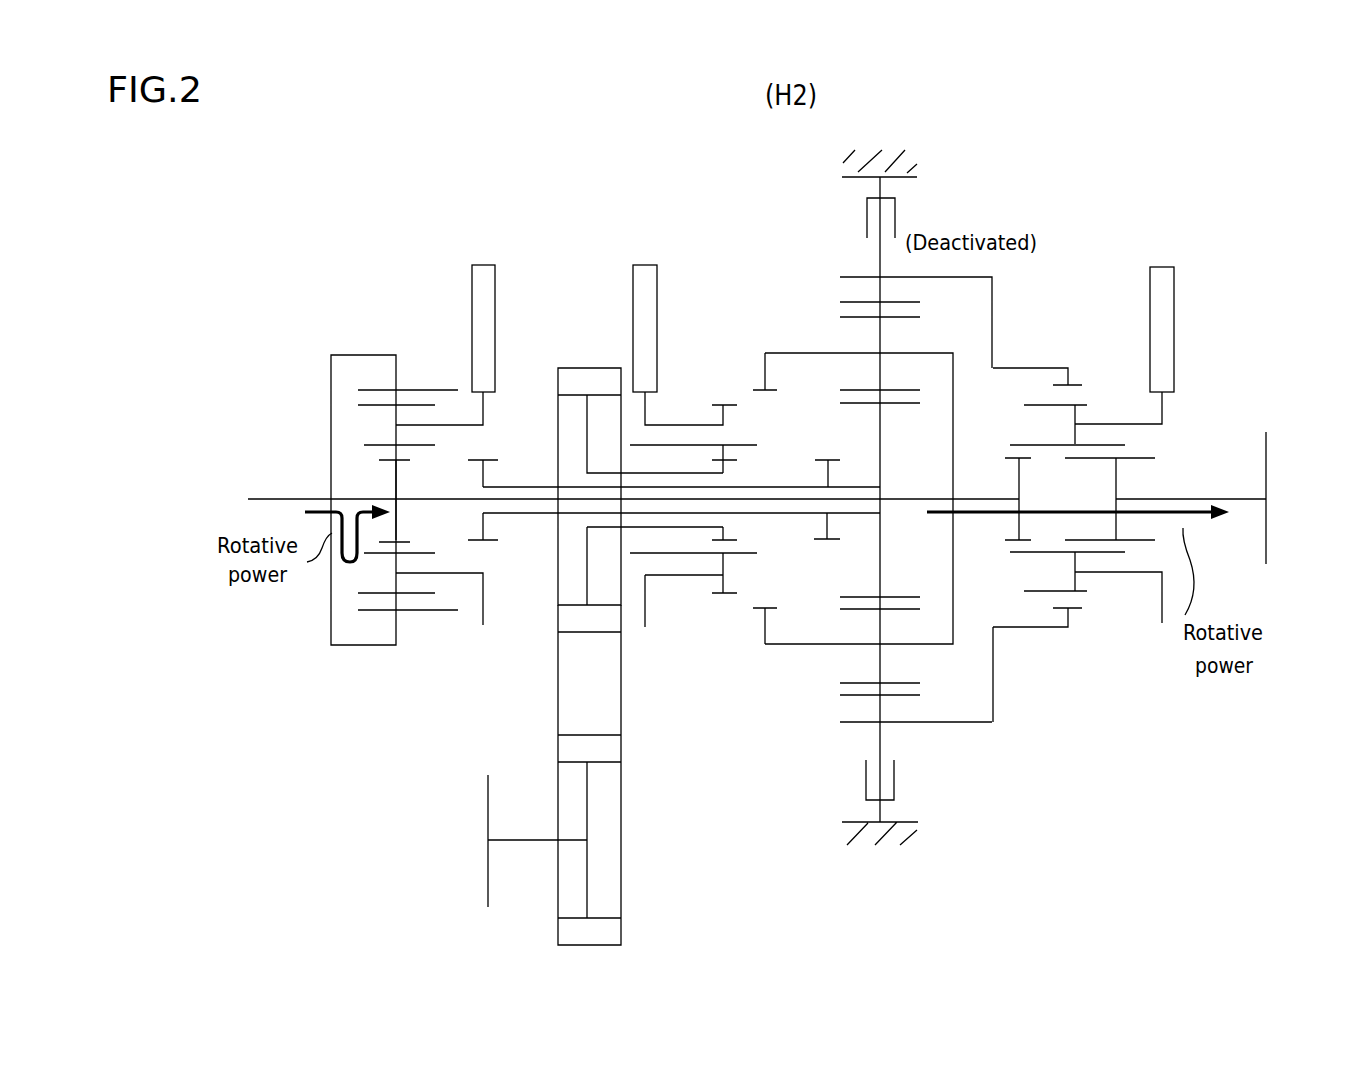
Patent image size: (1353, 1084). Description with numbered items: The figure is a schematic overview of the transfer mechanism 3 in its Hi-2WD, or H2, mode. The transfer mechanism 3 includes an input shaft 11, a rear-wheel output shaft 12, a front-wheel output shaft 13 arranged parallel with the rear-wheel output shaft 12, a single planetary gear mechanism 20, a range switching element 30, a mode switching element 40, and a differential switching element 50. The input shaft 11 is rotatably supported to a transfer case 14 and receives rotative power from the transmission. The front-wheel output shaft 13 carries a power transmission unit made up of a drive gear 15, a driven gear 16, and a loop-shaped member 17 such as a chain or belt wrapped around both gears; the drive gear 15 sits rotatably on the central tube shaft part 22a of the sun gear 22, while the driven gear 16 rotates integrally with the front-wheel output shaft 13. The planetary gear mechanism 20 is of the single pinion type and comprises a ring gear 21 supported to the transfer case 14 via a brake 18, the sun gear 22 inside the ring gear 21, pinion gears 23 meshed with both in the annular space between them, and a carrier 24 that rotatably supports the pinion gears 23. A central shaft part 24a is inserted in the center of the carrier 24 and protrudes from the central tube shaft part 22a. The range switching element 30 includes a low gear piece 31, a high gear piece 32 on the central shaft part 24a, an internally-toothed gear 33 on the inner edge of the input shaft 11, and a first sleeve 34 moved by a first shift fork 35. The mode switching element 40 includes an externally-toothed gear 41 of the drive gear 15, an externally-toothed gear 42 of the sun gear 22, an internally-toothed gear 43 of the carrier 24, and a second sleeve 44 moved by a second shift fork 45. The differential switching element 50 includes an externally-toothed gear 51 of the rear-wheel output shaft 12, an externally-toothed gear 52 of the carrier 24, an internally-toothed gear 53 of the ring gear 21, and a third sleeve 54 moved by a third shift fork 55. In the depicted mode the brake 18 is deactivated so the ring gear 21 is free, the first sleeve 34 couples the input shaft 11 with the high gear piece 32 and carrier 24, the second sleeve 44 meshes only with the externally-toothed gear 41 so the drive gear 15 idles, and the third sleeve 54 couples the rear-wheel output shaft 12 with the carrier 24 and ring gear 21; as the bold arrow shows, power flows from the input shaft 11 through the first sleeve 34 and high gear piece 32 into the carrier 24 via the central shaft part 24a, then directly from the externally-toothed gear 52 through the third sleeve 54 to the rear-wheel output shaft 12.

The transfer mechanism 3 is at (358, 214).
The input shaft 11 is at (271, 497).
The rear-wheel output shaft 12 is at (1245, 501).
The front-wheel output shaft 13 is at (527, 845).
The transfer case 14 is at (887, 160).
The drive gear 15 is at (587, 560).
The driven gear 16 is at (588, 882).
The loop-shaped member 17 is at (600, 680).
The brake 18 is at (905, 212).
The planetary gear mechanism 20 is at (843, 248).
The ring gear 21 is at (850, 302).
The sun gear 22 is at (881, 457).
The central tube shaft part 22a is at (746, 487).
The pinion gears 23 is at (878, 340).
The carrier 24 is at (953, 566).
The central shaft part 24a is at (910, 500).
The range switching element 30 is at (446, 271).
The low gear piece 31 is at (493, 457).
The high gear piece 32 is at (400, 478).
The internally-toothed gear 33 is at (398, 355).
The first sleeve 34 is at (452, 425).
The first shift fork 35 is at (496, 312).
The mode switching element 40 is at (761, 310).
The externally-toothed gear 41 is at (723, 534).
The externally-toothed gear 42 is at (835, 527).
The internally-toothed gear 43 is at (766, 368).
The second sleeve 44 is at (690, 425).
The second shift fork 45 is at (643, 288).
The differential switching element 50 is at (1131, 284).
The externally-toothed gear 51 is at (1140, 458).
The externally-toothed gear 52 is at (1021, 490).
The internally-toothed gear 53 is at (1069, 370).
The third sleeve 54 is at (1119, 424).
The third shift fork 55 is at (1166, 300).